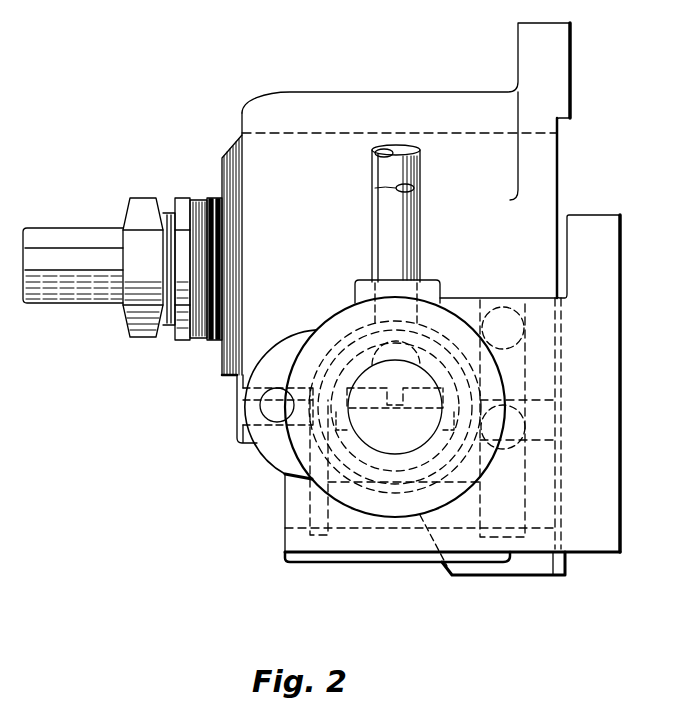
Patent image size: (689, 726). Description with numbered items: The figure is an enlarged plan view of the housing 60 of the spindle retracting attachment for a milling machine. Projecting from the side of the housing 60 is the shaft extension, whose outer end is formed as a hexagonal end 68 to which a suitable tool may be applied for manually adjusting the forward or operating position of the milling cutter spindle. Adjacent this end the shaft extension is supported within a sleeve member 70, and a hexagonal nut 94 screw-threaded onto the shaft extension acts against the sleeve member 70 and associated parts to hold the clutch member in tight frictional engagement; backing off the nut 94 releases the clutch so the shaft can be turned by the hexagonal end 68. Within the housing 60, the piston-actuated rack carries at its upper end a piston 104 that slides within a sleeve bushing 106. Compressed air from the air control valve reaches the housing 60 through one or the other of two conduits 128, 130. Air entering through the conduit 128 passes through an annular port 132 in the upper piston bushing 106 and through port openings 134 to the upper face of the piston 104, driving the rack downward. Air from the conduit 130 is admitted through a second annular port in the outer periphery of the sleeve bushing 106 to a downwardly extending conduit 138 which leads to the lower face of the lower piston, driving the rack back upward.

The housing 60 is at (348, 95).
The hexagonal end 68 is at (50, 240).
The sleeve member 70 is at (170, 198).
The hexagonal nut 94 is at (133, 206).
The piston 104 is at (370, 370).
The sleeve bushing 106 is at (350, 347).
The conduit 128 is at (380, 232).
The conduit 130 is at (372, 172).
The annular port 132 is at (484, 298).
The port openings 134 is at (428, 340).
The downwardly extending conduit 138 is at (277, 422).